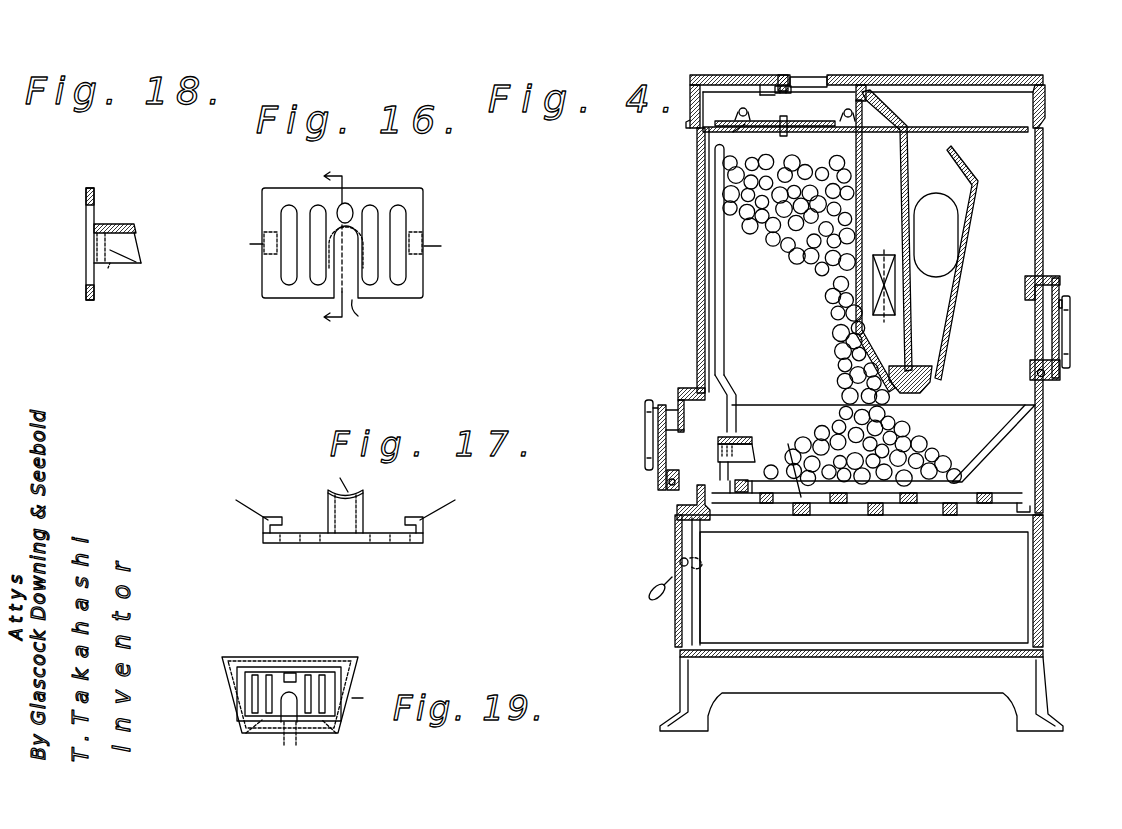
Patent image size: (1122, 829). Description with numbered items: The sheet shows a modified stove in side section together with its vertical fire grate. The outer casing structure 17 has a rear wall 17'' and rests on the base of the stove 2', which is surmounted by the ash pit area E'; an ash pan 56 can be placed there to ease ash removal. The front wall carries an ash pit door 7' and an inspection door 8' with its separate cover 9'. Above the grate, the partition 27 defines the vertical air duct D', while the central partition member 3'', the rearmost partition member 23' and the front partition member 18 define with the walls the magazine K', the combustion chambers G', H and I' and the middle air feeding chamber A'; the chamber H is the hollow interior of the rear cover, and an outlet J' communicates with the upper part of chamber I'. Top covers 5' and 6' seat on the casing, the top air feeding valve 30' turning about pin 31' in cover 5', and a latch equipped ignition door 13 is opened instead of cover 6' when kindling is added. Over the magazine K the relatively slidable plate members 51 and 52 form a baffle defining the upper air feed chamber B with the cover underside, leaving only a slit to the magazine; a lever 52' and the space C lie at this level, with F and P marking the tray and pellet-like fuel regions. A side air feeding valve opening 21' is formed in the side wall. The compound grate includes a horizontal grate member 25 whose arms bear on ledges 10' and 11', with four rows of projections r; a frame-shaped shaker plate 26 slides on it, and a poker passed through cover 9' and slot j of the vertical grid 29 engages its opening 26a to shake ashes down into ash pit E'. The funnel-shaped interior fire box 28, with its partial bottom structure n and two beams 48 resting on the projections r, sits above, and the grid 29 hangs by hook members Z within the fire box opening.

In FIG. 4, the base of the stove 2' is at (861, 694).
In FIG. 4, the central partition member 3'' is at (894, 239).
In FIG. 4, the top cover 5' is at (857, 86).
In FIG. 4, the top cover 6' is at (1043, 86).
In FIG. 4, the ash pit door 7' is at (669, 571).
In FIG. 4, the inspection door 8' is at (681, 423).
In FIG. 4, the cover 9' is at (636, 428).
In FIG. 4, the ledge 10' is at (1050, 516).
In FIG. 4, the ledge 11' is at (861, 522).
In FIG. 4, the ignition door 13 is at (1059, 282).
In FIG. 4, the outer casing structure 17 is at (680, 260).
In FIG. 4, the rear wall 17'' is at (1059, 320).
In FIG. 4, the side air feeding valve opening 21' is at (835, 286).
In FIG. 4, the rearmost partition member 23' is at (978, 263).
In FIG. 4, the horizontal grate member 25 is at (815, 505).
In FIG. 4, the shaker plate 26 is at (893, 496).
In FIG. 4, the opening 26a is at (692, 496).
In FIG. 4, the partition 27 is at (716, 172).
In FIG. 4, the interior fire box 28 is at (1005, 432).
In FIG. 19, the interior fire box 28 is at (322, 657).
In FIG. 4, the vertical grid 29 is at (718, 450).
In FIG. 18, the vertical grid 29 is at (95, 192).
In FIG. 16, the vertical grid 29 is at (424, 208).
In FIG. 19, the vertical grid 29 is at (254, 667).
In FIG. 4, the top air feeding valve 30' is at (868, 51).
In FIG. 4, the pin 31' is at (775, 68).
In FIG. 4, the longitudinal beams 48 is at (930, 483).
In FIG. 19, the longitudinal beams 48 is at (297, 742).
In FIG. 4, the plate member 51 is at (832, 121).
In FIG. 4, the plate member 52 is at (775, 75).
In FIG. 4, the slide lever 52' is at (728, 88).
In FIG. 4, the ash pan 56 is at (1022, 575).
In FIG. 16, the front partition member 18 is at (317, 248).
In FIG. 4, the middle air feeding chamber A' is at (879, 222).
In FIG. 4, the upper air feed chamber B is at (865, 116).
In FIG. 4, the compartment C is at (721, 114).
In FIG. 4, the air duct D' is at (688, 281).
In FIG. 4, the ash pit area E' is at (859, 586).
In FIG. 4, the tray F is at (878, 443).
In FIG. 4, the combustion chamber G' is at (990, 304).
In FIG. 4, the combustion chamber portion H is at (956, 112).
In FIG. 4, the combustion chamber I' is at (932, 297).
In FIG. 4, the outlet J' is at (936, 235).
In FIG. 19, the magazine K is at (299, 695).
In FIG. 4, the magazine K' is at (793, 321).
In FIG. 4, the pellets P is at (830, 441).
In FIG. 18, the hook members Z is at (167, 270).
In FIG. 16, the hook members Z is at (346, 246).
In FIG. 17, the hook members Z is at (344, 515).
In FIG. 18, the slot j is at (106, 275).
In FIG. 16, the slot j is at (357, 316).
In FIG. 17, the slot j is at (345, 496).
In FIG. 19, the slot j is at (292, 741).
In FIG. 19, the partial bottom structure n is at (243, 745).
In FIG. 4, the projections r is at (791, 461).